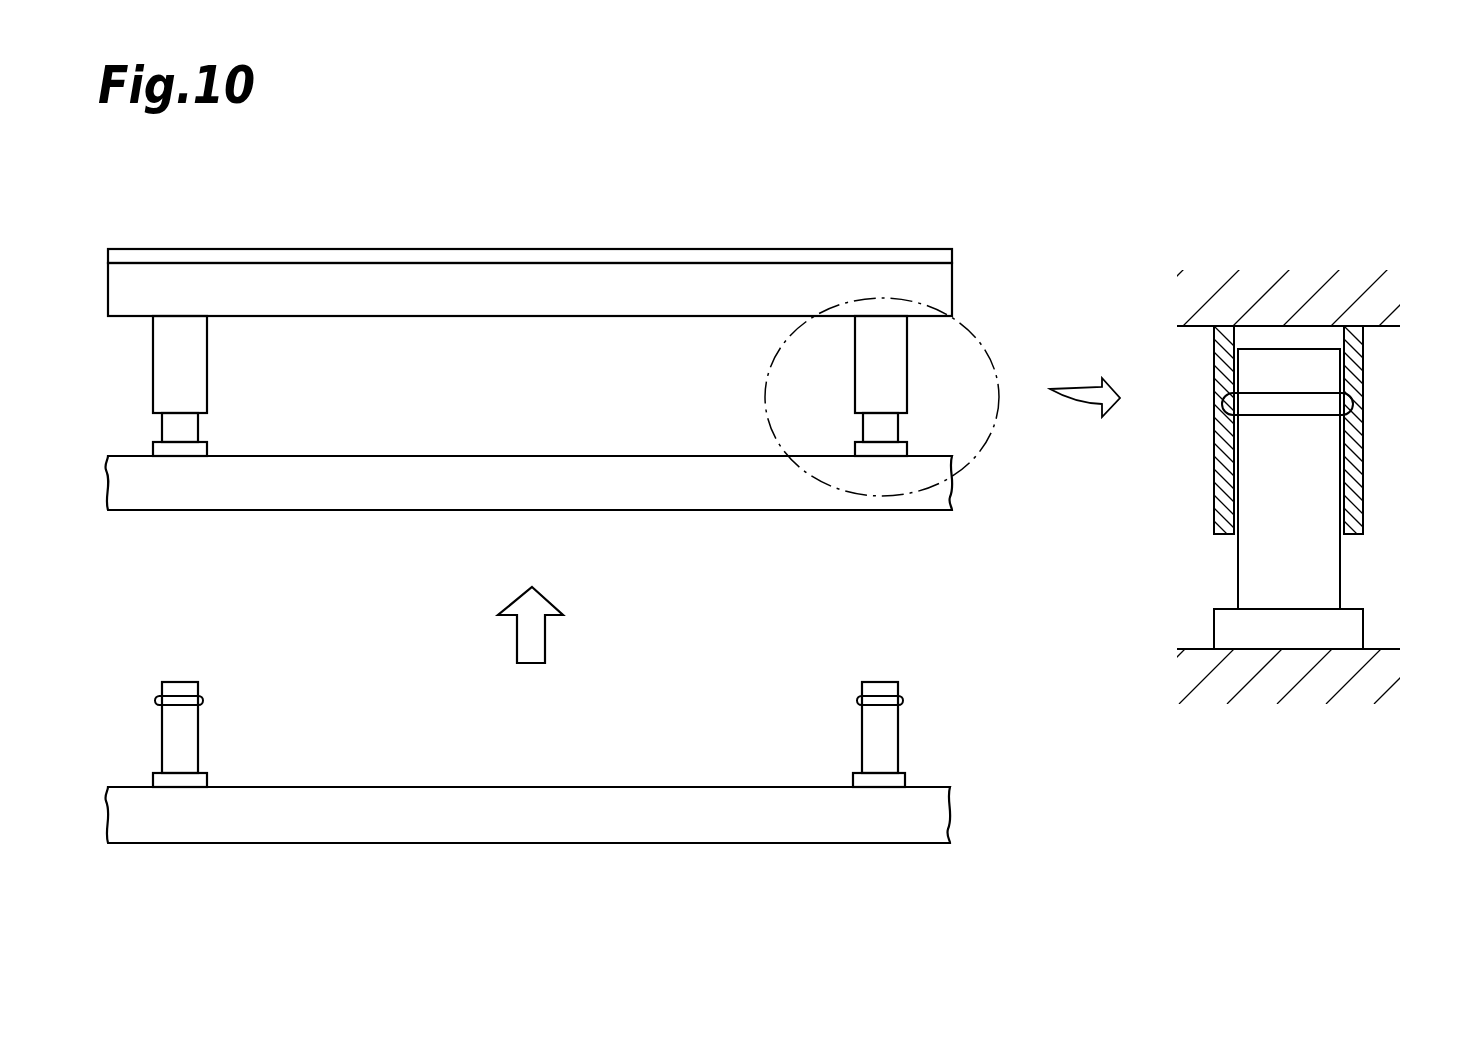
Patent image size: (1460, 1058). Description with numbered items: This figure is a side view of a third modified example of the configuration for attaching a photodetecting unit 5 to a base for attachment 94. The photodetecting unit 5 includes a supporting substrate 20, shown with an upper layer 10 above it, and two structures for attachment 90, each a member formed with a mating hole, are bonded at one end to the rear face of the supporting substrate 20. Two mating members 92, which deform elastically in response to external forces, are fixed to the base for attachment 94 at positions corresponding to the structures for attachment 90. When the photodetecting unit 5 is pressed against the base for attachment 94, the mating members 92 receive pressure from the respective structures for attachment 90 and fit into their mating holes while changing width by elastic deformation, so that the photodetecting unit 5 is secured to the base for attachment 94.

The photodetecting unit 5 is at (930, 205).
The top panel 10 is at (368, 257).
The supporting substrate 20 is at (660, 280).
The structure for attachment 90 is at (207, 356).
The mating member 92 is at (198, 428).
The base for attachment 94 is at (520, 467).